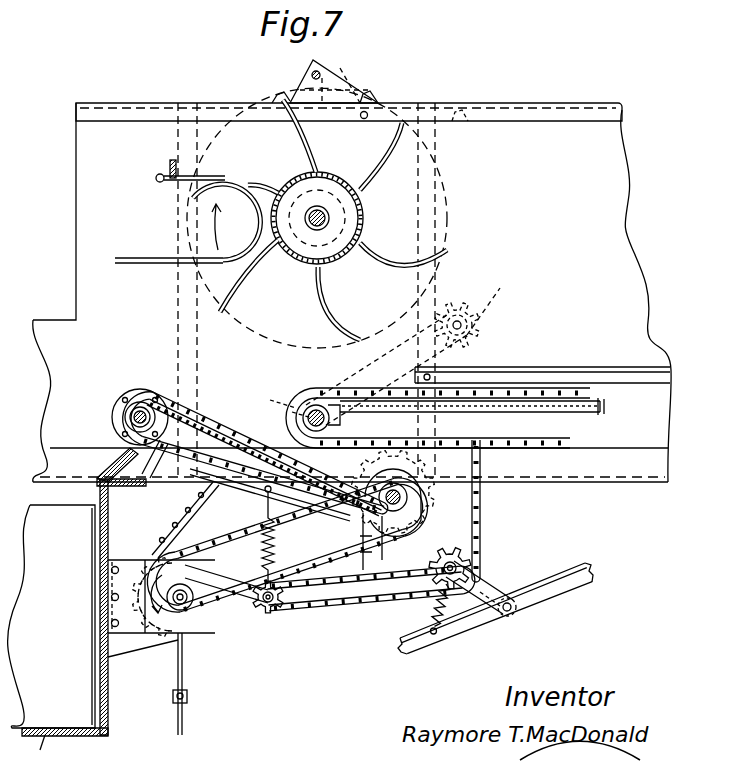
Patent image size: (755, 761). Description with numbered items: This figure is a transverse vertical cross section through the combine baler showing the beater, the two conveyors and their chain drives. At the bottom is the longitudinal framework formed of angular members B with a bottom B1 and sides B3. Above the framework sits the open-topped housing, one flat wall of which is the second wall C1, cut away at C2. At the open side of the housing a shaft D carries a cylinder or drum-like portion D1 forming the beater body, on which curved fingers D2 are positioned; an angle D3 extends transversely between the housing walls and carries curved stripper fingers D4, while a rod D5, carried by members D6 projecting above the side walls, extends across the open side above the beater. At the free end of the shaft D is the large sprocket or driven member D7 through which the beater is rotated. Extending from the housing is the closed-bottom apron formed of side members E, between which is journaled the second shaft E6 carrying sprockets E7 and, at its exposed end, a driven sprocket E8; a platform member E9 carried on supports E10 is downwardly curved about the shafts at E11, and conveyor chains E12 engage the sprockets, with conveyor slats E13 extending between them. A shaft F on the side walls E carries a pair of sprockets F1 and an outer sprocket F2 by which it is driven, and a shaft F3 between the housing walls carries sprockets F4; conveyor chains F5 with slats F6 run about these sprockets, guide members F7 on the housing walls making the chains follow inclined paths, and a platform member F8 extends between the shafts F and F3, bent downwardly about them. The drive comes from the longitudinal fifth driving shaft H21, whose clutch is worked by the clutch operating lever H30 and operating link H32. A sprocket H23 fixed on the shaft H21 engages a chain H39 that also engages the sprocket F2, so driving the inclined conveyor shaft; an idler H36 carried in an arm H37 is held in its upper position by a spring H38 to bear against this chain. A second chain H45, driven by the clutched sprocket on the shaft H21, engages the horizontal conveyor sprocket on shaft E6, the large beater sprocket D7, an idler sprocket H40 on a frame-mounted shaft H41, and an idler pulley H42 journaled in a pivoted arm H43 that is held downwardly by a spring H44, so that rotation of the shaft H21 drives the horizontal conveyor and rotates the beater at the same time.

The second wall C1 is at (106, 130).
The cut-away portion C2 is at (76, 196).
The shaft D is at (349, 208).
The cylinder or drum-like portion D1 is at (362, 226).
The curved fingers D2 is at (406, 135).
The angle D3 is at (170, 168).
The stripper fingers D4 is at (146, 254).
The rod D5 is at (318, 70).
The members D6 is at (328, 88).
The sprocket or driven member D7 is at (280, 92).
The side members E is at (630, 278).
The second shaft E6 is at (342, 418).
The sprockets E7 is at (336, 400).
The driven sprocket E8 is at (290, 404).
The platform member E9 is at (540, 412).
The supports E10 is at (604, 404).
The downwardly curved portion E11 is at (300, 404).
The conveyor chains E12 is at (520, 392).
The conveyor slats E13 is at (575, 395).
The shaft F is at (424, 502).
The sprockets F1 is at (384, 524).
The sprocket F2 is at (366, 556).
The shaft F3 is at (118, 408).
The sprockets F4 is at (168, 398).
The conveyor chains F5 is at (158, 480).
The slats F6 is at (116, 420).
The guide members F7 is at (212, 404).
The platform member F8 is at (252, 484).
The angular members B is at (108, 516).
The bottom B1 is at (50, 748).
The sides B3 is at (108, 680).
The fifth driving shaft H21 is at (188, 608).
The sprocket H23 is at (258, 616).
The clutch operating lever H30 is at (186, 688).
The operating link H32 is at (188, 723).
The idler H36 is at (300, 620).
The arm H37 is at (262, 560).
The spring H38 is at (272, 546).
The chain H39 is at (320, 562).
The idler sprocket H40 is at (406, 340).
The shaft H41 is at (476, 318).
The idler pulley H42 is at (452, 552).
The pivoted arm H43 is at (490, 596).
The spring H44 is at (449, 606).
The chain H45 is at (486, 541).